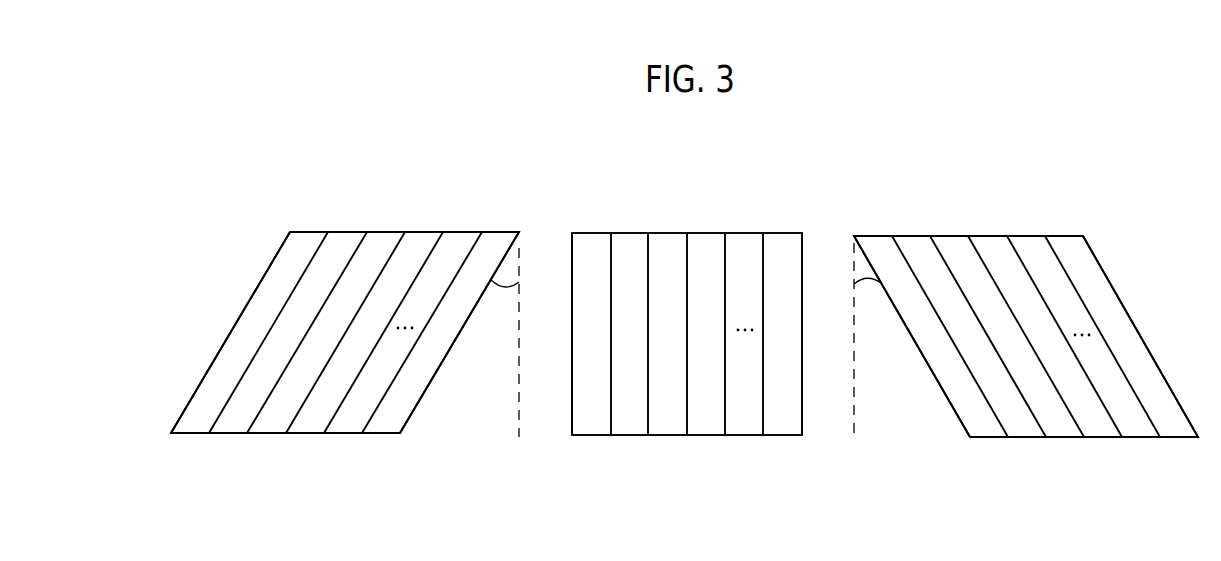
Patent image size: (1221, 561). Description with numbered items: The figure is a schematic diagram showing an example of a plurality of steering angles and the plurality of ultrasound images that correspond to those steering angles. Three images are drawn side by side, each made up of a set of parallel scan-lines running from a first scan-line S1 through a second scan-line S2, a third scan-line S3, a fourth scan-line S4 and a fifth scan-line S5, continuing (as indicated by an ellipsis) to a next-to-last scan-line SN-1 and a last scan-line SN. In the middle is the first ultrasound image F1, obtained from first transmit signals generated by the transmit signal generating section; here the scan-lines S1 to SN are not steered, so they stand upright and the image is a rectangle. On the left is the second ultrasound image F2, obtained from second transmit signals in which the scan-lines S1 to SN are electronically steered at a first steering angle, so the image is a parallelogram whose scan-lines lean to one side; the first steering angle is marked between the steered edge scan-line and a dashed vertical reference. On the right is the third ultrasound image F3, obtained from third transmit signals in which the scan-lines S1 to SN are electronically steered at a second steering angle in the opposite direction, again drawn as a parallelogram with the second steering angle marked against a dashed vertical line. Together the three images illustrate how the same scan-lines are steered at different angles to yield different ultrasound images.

The first ultrasound image F1 is at (704, 233).
The second ultrasound image F2 is at (385, 232).
The third ultrasound image F3 is at (985, 236).
The scan-line S1 is at (570, 353).
The scan-line S2 is at (607, 353).
The scan-line S3 is at (646, 353).
The scan-line S4 is at (683, 353).
The scan-line S5 is at (721, 353).
The scan-line SN-1 is at (763, 353).
The scan-line SN is at (806, 353).